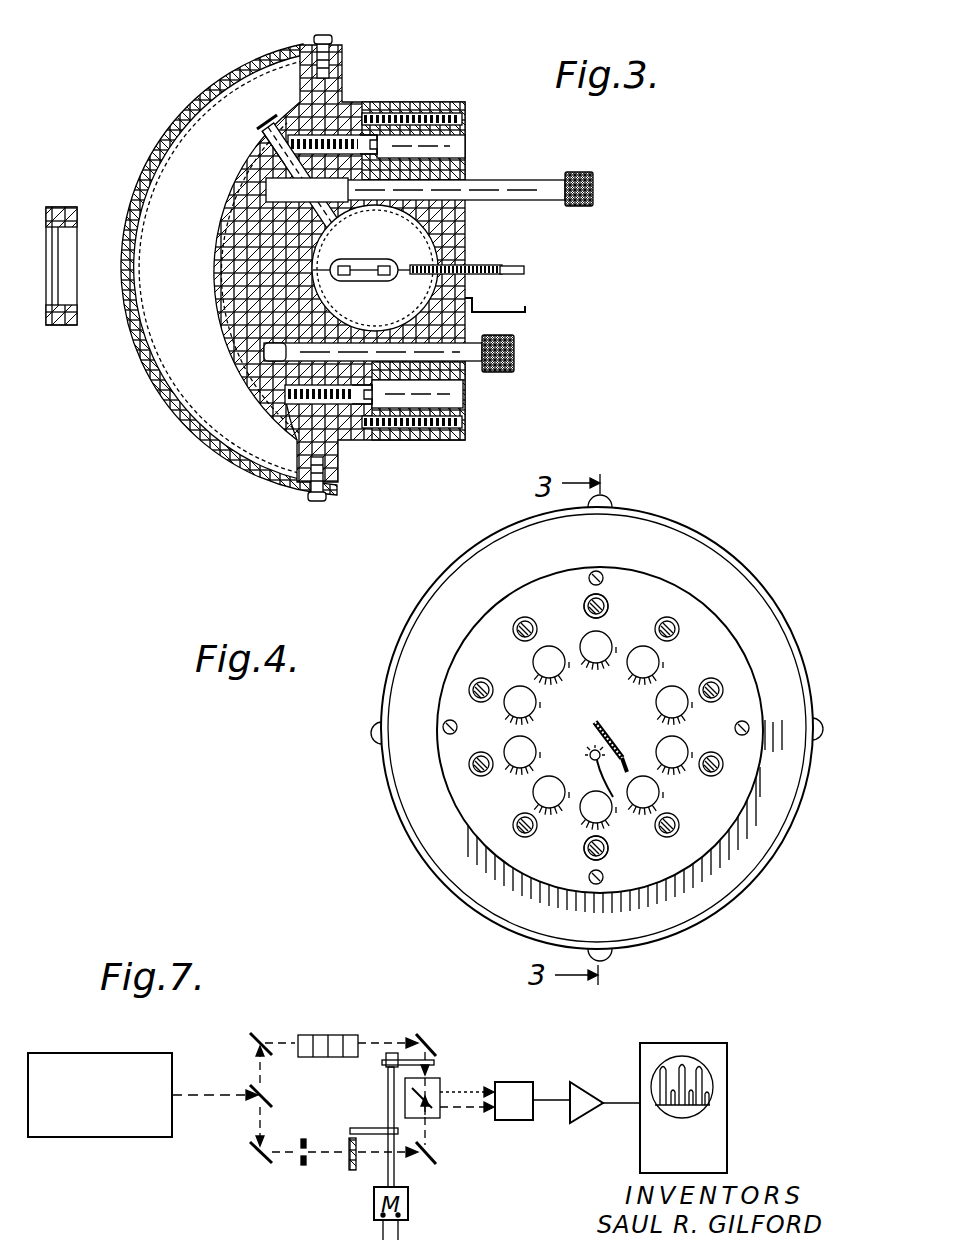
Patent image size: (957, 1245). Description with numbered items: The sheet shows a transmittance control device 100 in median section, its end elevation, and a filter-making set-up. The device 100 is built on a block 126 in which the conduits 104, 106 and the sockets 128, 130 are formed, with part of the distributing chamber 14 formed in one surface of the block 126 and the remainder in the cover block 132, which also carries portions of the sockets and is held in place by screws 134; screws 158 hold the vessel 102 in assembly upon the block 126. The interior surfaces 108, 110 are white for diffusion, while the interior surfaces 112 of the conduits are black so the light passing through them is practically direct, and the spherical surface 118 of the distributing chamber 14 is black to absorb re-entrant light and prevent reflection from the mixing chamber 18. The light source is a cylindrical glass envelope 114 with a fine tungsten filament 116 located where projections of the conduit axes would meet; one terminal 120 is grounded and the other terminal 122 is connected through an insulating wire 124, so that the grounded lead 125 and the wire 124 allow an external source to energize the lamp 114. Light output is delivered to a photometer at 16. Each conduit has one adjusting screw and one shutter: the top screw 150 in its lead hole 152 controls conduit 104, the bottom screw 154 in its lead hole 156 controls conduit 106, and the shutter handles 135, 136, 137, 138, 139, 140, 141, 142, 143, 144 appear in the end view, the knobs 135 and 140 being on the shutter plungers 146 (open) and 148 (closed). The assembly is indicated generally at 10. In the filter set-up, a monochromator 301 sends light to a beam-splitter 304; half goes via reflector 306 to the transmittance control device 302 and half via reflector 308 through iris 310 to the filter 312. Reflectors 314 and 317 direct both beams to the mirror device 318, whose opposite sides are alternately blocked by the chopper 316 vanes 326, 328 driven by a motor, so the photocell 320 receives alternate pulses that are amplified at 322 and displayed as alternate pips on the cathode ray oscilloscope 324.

In FIG. 3, the lamp housing assembly 10 is at (334, 267).
In FIG. 3, the distributing chamber 14 is at (420, 248).
In FIG. 3, the photometer location 16 is at (95, 266).
In FIG. 3, the mixing chamber 18 is at (142, 306).
In FIG. 3, the transmittance control device 100 is at (334, 280).
In FIG. 3, the vessel 102 is at (148, 93).
In FIG. 4, the vessel 102 is at (427, 860).
In FIG. 3, the conduit 104 is at (270, 137).
In FIG. 3, the conduit 106 is at (273, 407).
In FIG. 3, the interior surface 108 is at (213, 230).
In FIG. 3, the interior surface 110 is at (88, 185).
In FIG. 3, the conduit interior surface 112 is at (287, 137).
In FIG. 3, the glass envelope 114 is at (387, 253).
In FIG. 3, the tungsten filament 116 is at (352, 290).
In FIG. 3, the distributing chamber surface 118 is at (325, 264).
In FIG. 3, the terminal 120 is at (330, 282).
In FIG. 3, the terminal 122 is at (513, 283).
In FIG. 3, the insulating wire 124 is at (487, 265).
In FIG. 4, the insulating wire 124 is at (607, 722).
In FIG. 3, the grounded lead 125 is at (513, 308).
In FIG. 4, the grounded lead 125 is at (592, 757).
In FIG. 3, the block 126 is at (237, 322).
In FIG. 4, the block 126 is at (735, 872).
In FIG. 3, the socket 128 is at (270, 183).
In FIG. 3, the socket 130 is at (263, 350).
In FIG. 3, the cover block 132 is at (423, 103).
In FIG. 4, the cover block 132 is at (733, 677).
In FIG. 3, the screws 134 is at (467, 118).
In FIG. 4, the screws 134 is at (597, 573).
In FIG. 3, the shutter handle 135 is at (578, 174).
In FIG. 4, the shutter handle 135 is at (587, 637).
In FIG. 4, the shutter handle 136 is at (650, 650).
In FIG. 4, the shutter handle 137 is at (670, 693).
In FIG. 4, the shutter handle 138 is at (670, 747).
In FIG. 4, the shutter handle 139 is at (655, 790).
In FIG. 3, the shutter handle 140 is at (512, 350).
In FIG. 4, the shutter handle 140 is at (587, 812).
In FIG. 4, the shutter handle 141 is at (537, 795).
In FIG. 4, the shutter handle 142 is at (507, 750).
In FIG. 4, the shutter handle 143 is at (515, 697).
In FIG. 4, the shutter handle 144 is at (540, 658).
In FIG. 3, the shutter plunger 146 is at (487, 187).
In FIG. 3, the shutter plunger 148 is at (463, 367).
In FIG. 3, the top screw 150 is at (330, 120).
In FIG. 4, the top screw 150 is at (600, 600).
In FIG. 3, the lead hole 152 is at (467, 148).
In FIG. 4, the lead hole 152 is at (608, 600).
In FIG. 3, the bottom screw 154 is at (330, 397).
In FIG. 4, the bottom screw 154 is at (607, 853).
In FIG. 3, the lead hole 156 is at (438, 400).
In FIG. 4, the lead hole 156 is at (583, 860).
In FIG. 3, the screws 158 is at (343, 40).
In FIG. 4, the screws 158 is at (600, 503).
In FIG. 7, the monochromator 301 is at (143, 1052).
In FIG. 7, the transmittance control device 302 is at (303, 1031).
In FIG. 7, the beam-splitter 304 is at (255, 1088).
In FIG. 7, the reflector 306 is at (250, 1043).
In FIG. 7, the reflector 308 is at (252, 1157).
In FIG. 7, the iris 310 is at (300, 1162).
In FIG. 7, the filter 312 is at (352, 1170).
In FIG. 7, the reflector 314 is at (420, 1035).
In FIG. 7, the chopper 316 is at (378, 1090).
In FIG. 7, the reflector 317 is at (430, 1162).
In FIG. 7, the mirror device 318 is at (435, 1118).
In FIG. 7, the photocell 320 is at (510, 1120).
In FIG. 7, the amplifier 322 is at (585, 1085).
In FIG. 7, the cathode ray oscilloscope 324 is at (640, 1062).
In FIG. 7, the blocking vane 326 is at (433, 1063).
In FIG. 7, the blocking vane 328 is at (358, 1128).